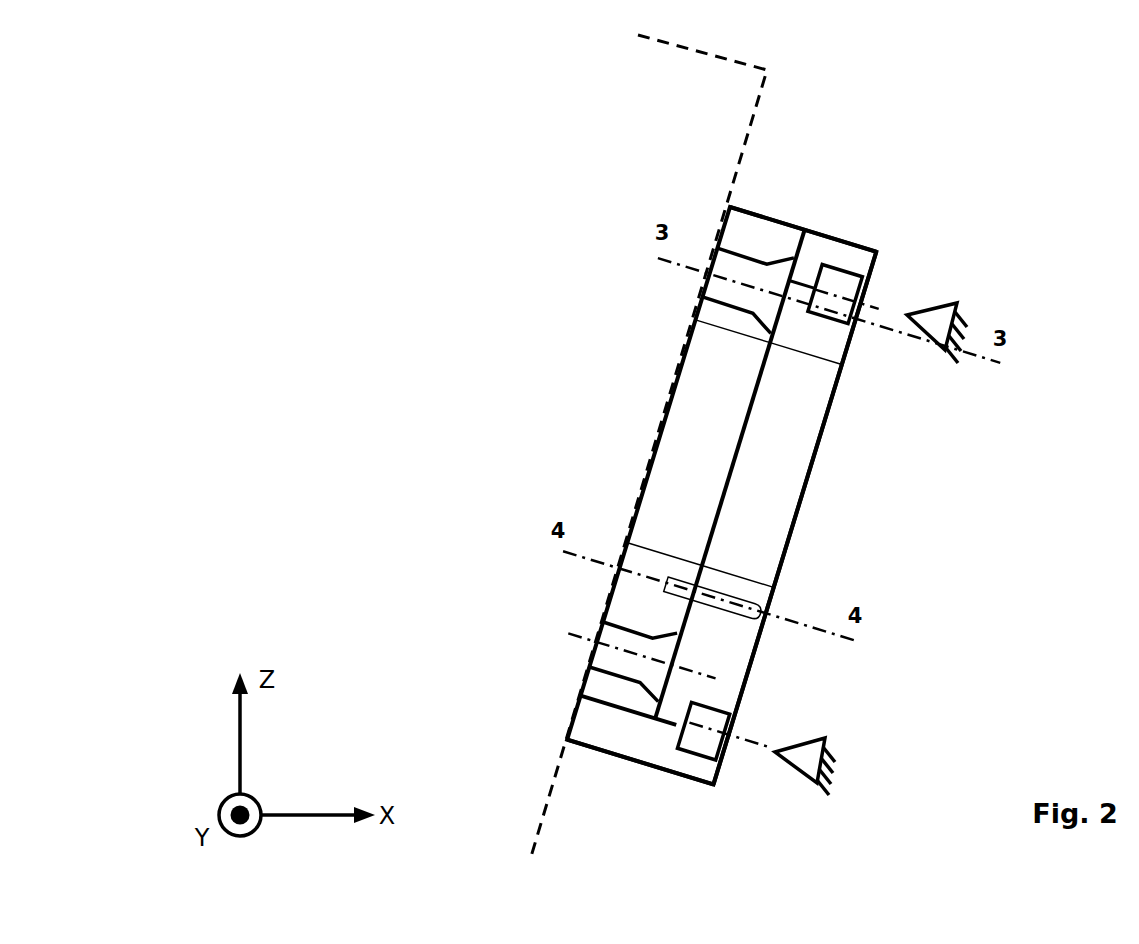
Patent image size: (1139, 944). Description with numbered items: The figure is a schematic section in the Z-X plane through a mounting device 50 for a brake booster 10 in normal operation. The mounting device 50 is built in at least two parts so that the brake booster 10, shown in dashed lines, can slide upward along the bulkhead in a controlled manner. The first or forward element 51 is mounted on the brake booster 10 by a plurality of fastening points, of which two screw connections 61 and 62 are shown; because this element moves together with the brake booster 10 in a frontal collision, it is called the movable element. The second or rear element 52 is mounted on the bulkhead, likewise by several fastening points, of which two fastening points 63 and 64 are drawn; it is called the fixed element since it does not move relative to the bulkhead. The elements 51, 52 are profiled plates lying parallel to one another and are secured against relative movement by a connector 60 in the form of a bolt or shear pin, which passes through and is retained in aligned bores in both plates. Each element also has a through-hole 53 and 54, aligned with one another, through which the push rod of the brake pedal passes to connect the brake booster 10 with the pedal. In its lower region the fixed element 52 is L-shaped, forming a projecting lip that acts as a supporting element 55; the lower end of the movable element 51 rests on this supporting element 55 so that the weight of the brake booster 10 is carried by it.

The brake booster 10 is at (742, 157).
The mounting device 50 is at (535, 315).
The first or forward element 51 is at (760, 222).
The second or rear element 52 is at (860, 255).
The through-hole 53 is at (672, 478).
The through-hole 54 is at (787, 463).
The supporting element 55 is at (635, 740).
The connector 60 is at (742, 593).
The screw connection 61 is at (706, 293).
The screw connection 62 is at (590, 657).
The fastening point 63 is at (888, 307).
The fastening point 64 is at (767, 747).